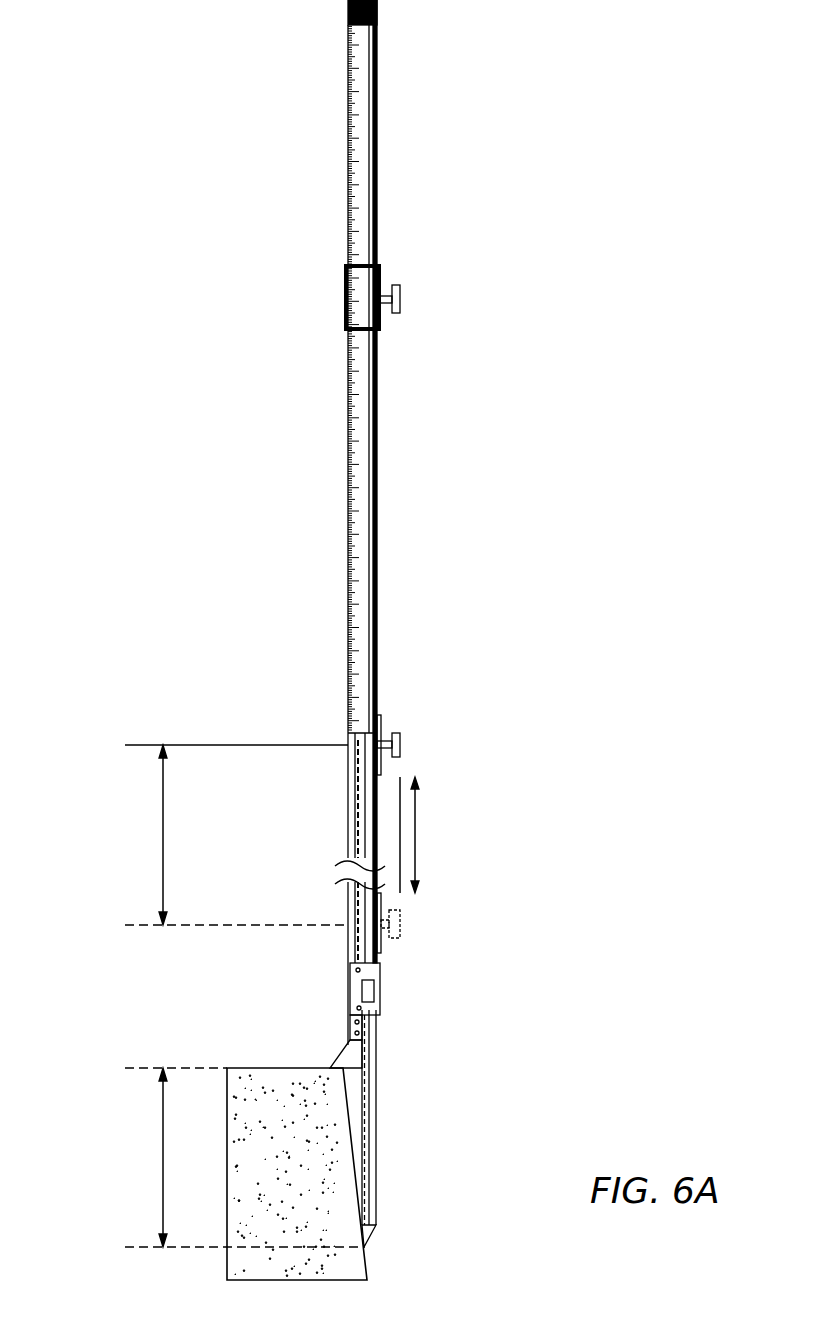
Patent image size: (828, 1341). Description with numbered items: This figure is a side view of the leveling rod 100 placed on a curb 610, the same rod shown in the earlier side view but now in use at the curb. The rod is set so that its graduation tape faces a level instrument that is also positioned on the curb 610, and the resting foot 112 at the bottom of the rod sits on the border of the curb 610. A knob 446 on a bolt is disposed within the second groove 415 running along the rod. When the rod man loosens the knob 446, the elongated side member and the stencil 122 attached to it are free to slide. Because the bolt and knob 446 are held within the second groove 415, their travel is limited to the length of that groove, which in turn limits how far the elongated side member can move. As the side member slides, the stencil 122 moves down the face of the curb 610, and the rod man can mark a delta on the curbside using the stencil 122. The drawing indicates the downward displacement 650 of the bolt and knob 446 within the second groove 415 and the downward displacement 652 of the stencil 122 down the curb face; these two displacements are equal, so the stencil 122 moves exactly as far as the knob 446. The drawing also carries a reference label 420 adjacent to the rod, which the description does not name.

The leveling rod 100 is at (311, 49).
The knob 446 is at (400, 745).
The second groove 415 is at (356, 816).
The downward displacement of the bolt and knob 650 is at (163, 866).
The downward displacement of the stencil 652 is at (163, 1120).
The curb 610 is at (292, 1080).
The resting foot 112 is at (340, 1058).
The probe rod 420 is at (378, 1065).
The stencil 122 is at (365, 1245).